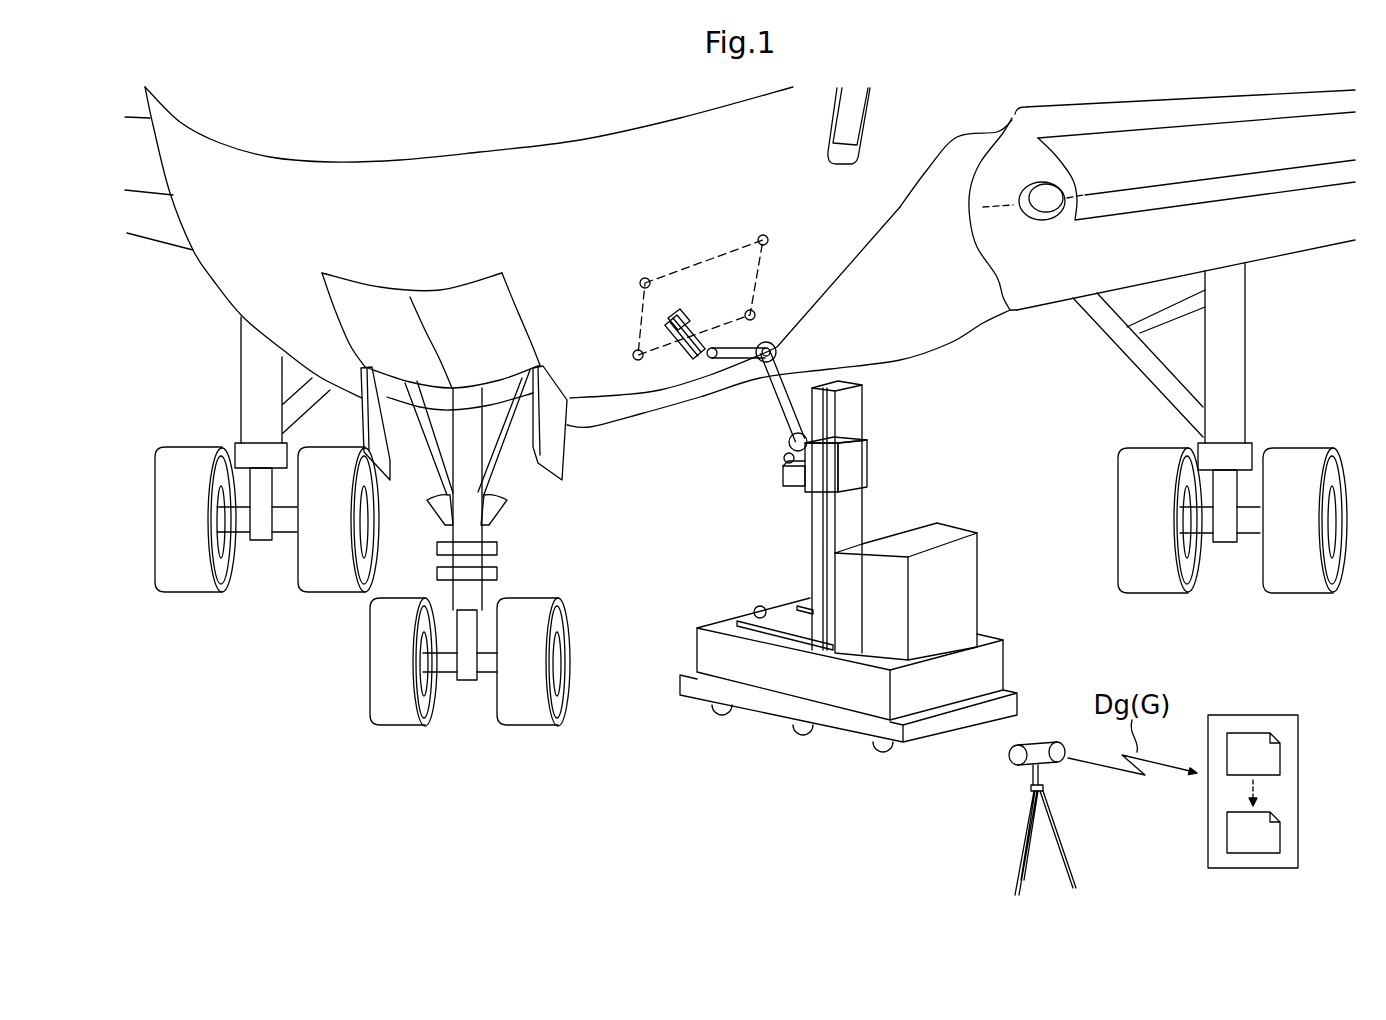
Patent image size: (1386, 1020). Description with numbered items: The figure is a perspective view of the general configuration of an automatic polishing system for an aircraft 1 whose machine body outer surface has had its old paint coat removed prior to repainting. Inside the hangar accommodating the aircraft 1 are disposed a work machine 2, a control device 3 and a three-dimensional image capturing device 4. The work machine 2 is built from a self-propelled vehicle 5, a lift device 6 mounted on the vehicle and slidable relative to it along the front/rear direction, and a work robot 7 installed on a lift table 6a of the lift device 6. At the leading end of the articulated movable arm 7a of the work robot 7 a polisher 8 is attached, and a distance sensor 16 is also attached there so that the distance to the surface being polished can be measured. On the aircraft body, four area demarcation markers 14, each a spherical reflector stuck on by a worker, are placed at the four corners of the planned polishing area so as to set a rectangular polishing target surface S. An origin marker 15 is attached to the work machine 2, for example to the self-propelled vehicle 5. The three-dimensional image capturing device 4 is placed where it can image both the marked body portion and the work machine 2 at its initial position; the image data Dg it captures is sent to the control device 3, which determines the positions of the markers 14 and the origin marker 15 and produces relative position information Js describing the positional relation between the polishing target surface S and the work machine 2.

The aircraft 1 is at (207, 289).
The work machine 2 is at (841, 528).
The control device 3 is at (1265, 712).
The three-dimensional image capturing device 4 is at (1012, 776).
The self-propelled vehicle 5 is at (780, 693).
The lift device 6 is at (858, 467).
The lift table 6a is at (798, 478).
The work robot 7 is at (777, 346).
The movable arm 7a is at (737, 358).
The polisher 8 is at (683, 346).
The area demarcation markers 14 is at (636, 287).
The origin marker 15 is at (784, 459).
The distance sensor 16 is at (694, 331).
The polishing target surface S is at (710, 252).